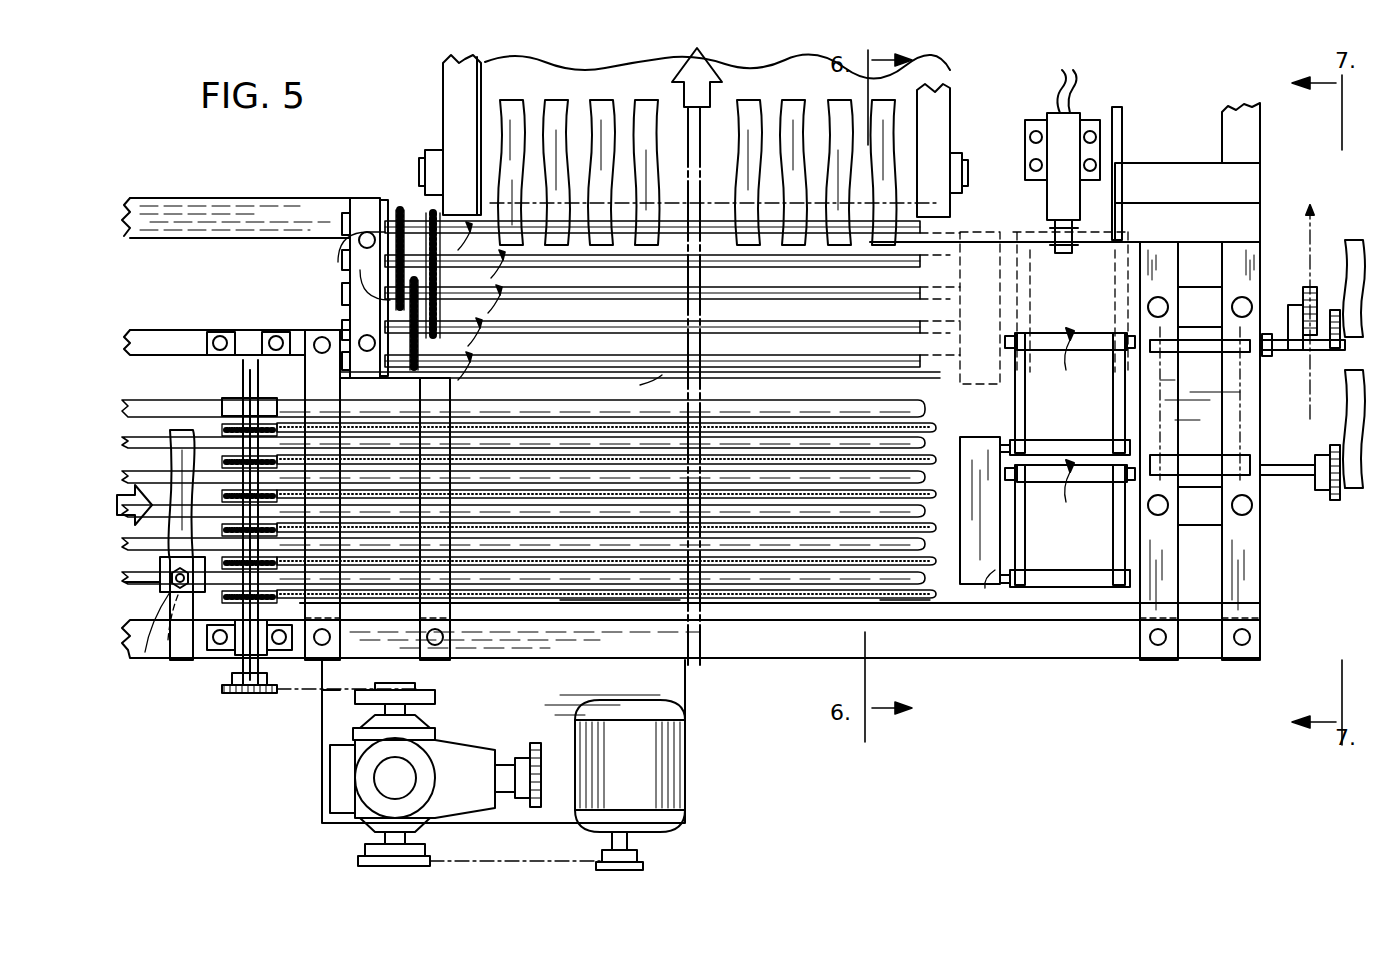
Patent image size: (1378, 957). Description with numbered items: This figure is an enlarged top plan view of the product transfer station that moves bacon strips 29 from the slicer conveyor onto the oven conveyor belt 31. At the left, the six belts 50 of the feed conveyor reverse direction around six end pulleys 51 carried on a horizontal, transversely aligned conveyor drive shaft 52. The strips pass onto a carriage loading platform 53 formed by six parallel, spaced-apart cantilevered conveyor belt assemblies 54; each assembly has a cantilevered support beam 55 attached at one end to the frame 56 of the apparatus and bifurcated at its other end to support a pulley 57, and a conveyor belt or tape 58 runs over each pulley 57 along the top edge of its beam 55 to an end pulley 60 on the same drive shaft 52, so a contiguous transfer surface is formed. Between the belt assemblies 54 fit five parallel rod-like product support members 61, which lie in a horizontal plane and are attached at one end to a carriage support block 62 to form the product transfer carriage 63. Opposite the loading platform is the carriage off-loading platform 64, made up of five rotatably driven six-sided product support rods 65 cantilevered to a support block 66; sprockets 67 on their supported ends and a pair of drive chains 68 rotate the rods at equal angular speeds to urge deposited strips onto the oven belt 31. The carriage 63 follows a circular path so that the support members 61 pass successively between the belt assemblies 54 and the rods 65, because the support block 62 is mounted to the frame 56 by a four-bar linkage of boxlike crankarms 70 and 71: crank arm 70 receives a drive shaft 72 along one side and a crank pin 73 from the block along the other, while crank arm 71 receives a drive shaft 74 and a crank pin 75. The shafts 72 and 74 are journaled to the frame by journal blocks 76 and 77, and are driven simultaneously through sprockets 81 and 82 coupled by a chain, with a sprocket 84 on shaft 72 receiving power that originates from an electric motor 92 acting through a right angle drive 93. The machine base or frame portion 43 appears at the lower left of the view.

The bacon strips 29 is at (596, 84).
The conveyor belt 31 is at (443, 70).
The frame 43 is at (355, 645).
The belts 50 is at (138, 577).
The end pulleys 51 is at (225, 400).
The conveyor drive shaft 52 is at (262, 672).
The carriage loading platform 53 is at (718, 408).
The conveyor belt assemblies 54 is at (940, 597).
The cantilevered support beam 55 is at (747, 605).
The frame 56 is at (185, 330).
The pulley 57 is at (905, 605).
The conveyor belt or tape 58 is at (617, 600).
The end pulley 60 is at (220, 645).
The product support members 61 is at (545, 470).
The carriage support block 62 is at (990, 577).
The product transfer carriage 63 is at (980, 437).
The carriage off-loading platform 64 is at (660, 380).
The product support rods 65 is at (470, 224).
The support block 66 is at (371, 200).
The sprockets 67 is at (380, 250).
The drive chains 68 is at (405, 216).
The crankarm 70 is at (1060, 350).
The crankarm 71 is at (1022, 525).
The drive shaft 72 is at (1283, 345).
The crank pin 73 is at (1010, 445).
The drive shaft 74 is at (1283, 470).
The crank pin 75 is at (1000, 575).
The journal block 76 is at (1240, 378).
The journal block 77 is at (1197, 470).
The sprocket 81 is at (1322, 490).
The sprocket 82 is at (1333, 310).
The sprocket 84 is at (1293, 312).
The electric motor 92 is at (640, 753).
The right angle drive 93 is at (470, 745).